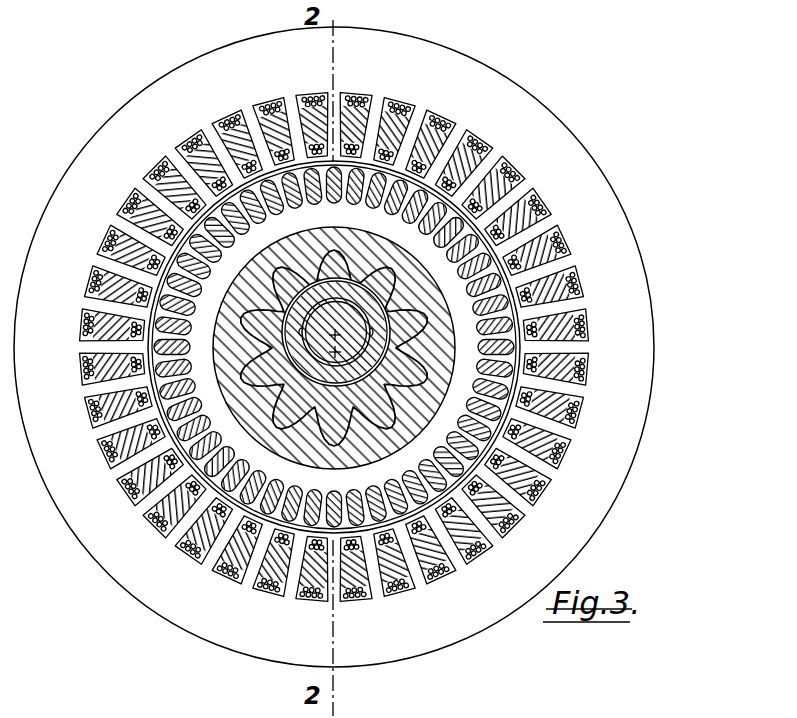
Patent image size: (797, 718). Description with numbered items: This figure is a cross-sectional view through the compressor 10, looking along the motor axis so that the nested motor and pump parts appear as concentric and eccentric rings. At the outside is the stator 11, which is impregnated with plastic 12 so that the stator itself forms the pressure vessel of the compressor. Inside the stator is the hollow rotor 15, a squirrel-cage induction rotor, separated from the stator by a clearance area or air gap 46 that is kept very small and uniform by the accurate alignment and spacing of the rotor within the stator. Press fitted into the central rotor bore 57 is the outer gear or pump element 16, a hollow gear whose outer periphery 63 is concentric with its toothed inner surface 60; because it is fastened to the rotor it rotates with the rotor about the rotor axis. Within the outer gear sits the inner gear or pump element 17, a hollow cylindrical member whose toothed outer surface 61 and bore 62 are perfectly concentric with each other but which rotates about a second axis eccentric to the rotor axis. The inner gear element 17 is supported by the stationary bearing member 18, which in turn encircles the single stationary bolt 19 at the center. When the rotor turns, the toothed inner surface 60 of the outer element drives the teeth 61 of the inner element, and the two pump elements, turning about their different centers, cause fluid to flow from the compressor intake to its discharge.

The compressor 10 is at (333, 347).
The stator 11 is at (63, 185).
The plastic 12 is at (518, 185).
The hollow rotor 15 is at (501, 384).
The outer gear or pump element 16 is at (381, 449).
The inner gear or pump element 17 is at (400, 372).
The stationary bearing member 18 is at (357, 290).
The stationary bolt 19 is at (357, 318).
The air gap 46 is at (491, 444).
The central rotor bore 57 is at (272, 244).
The toothed inner surface 60 is at (310, 437).
The toothed outer surface 61 is at (316, 401).
The bore 62 is at (306, 382).
The outer periphery 63 is at (233, 279).